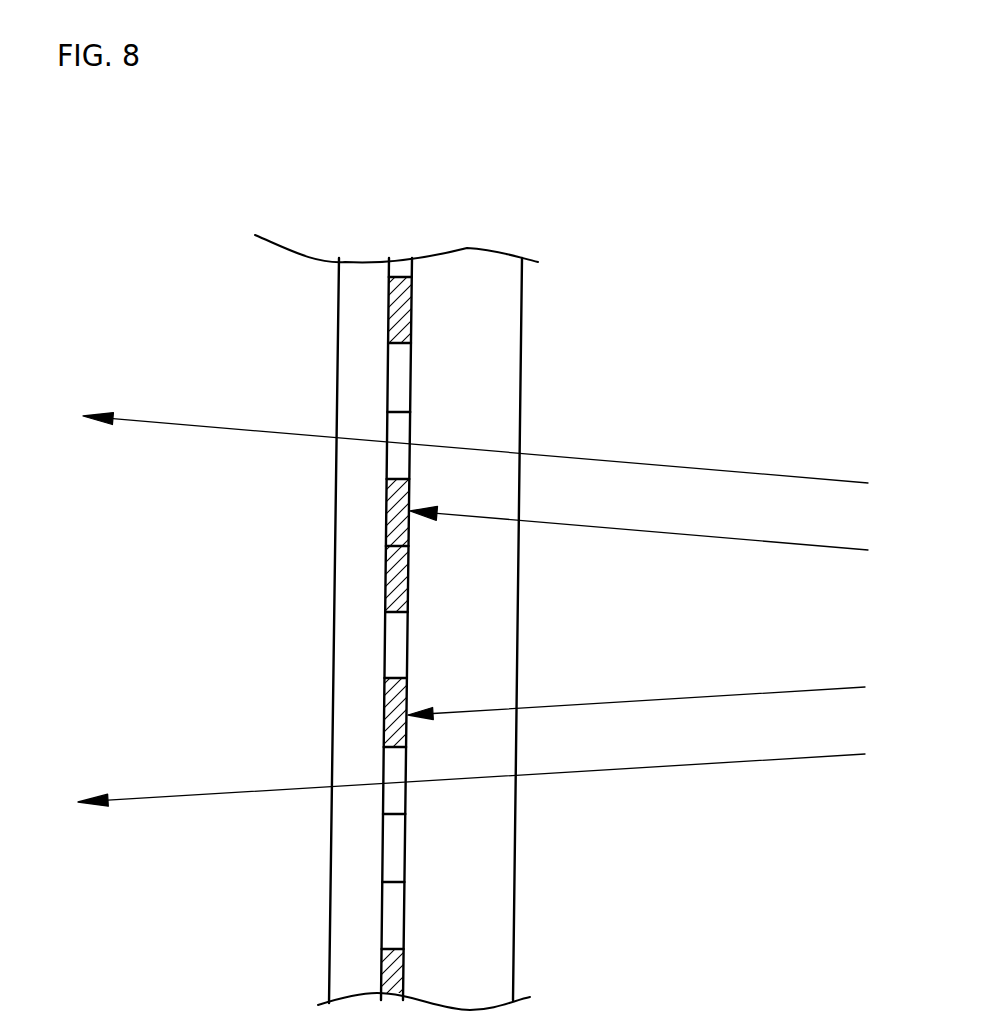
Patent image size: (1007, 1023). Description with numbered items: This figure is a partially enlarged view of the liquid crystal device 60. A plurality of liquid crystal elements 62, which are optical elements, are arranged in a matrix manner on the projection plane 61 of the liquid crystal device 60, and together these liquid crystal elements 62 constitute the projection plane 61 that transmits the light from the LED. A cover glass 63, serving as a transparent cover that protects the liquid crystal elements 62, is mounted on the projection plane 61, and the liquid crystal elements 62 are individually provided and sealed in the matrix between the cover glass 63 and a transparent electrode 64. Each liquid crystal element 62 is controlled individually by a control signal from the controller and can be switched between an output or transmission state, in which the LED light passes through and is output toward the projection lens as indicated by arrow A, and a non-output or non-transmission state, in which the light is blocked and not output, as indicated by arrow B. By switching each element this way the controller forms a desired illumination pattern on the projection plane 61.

The liquid crystal device 60 is at (467, 230).
The projection plane 61 is at (387, 315).
The liquid crystal element 62 is at (403, 367).
The cover glass 63 is at (345, 915).
The transparent electrode 64 is at (487, 918).
The arrow A is at (412, 423).
The arrow B is at (402, 532).